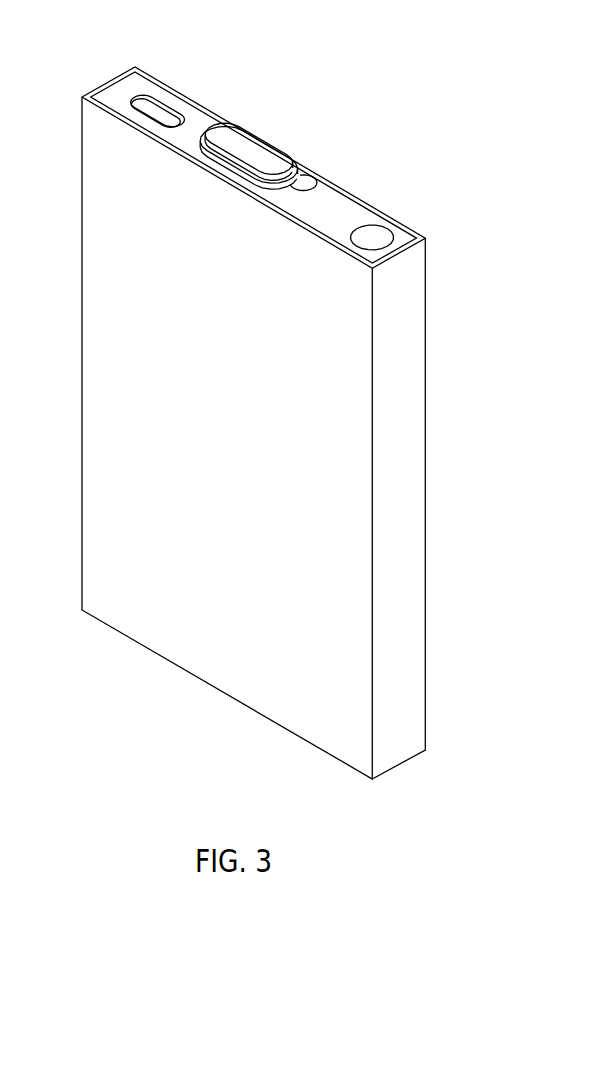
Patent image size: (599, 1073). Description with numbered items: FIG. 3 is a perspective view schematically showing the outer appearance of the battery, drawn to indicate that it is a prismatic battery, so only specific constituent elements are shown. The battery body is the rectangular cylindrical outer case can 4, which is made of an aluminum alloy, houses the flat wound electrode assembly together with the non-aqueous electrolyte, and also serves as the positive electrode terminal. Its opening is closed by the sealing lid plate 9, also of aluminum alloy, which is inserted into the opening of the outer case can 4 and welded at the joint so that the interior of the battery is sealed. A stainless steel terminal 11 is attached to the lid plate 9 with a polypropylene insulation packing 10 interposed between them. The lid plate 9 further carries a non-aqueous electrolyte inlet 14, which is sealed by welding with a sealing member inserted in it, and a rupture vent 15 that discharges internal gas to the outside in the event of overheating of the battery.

The outer case can 4 is at (412, 455).
The sealing lid plate 9 is at (198, 127).
The insulation packing 10 is at (312, 185).
The terminal 11 is at (258, 150).
The non-aqueous electrolyte inlet 14 is at (372, 236).
The rupture vent 15 is at (160, 110).